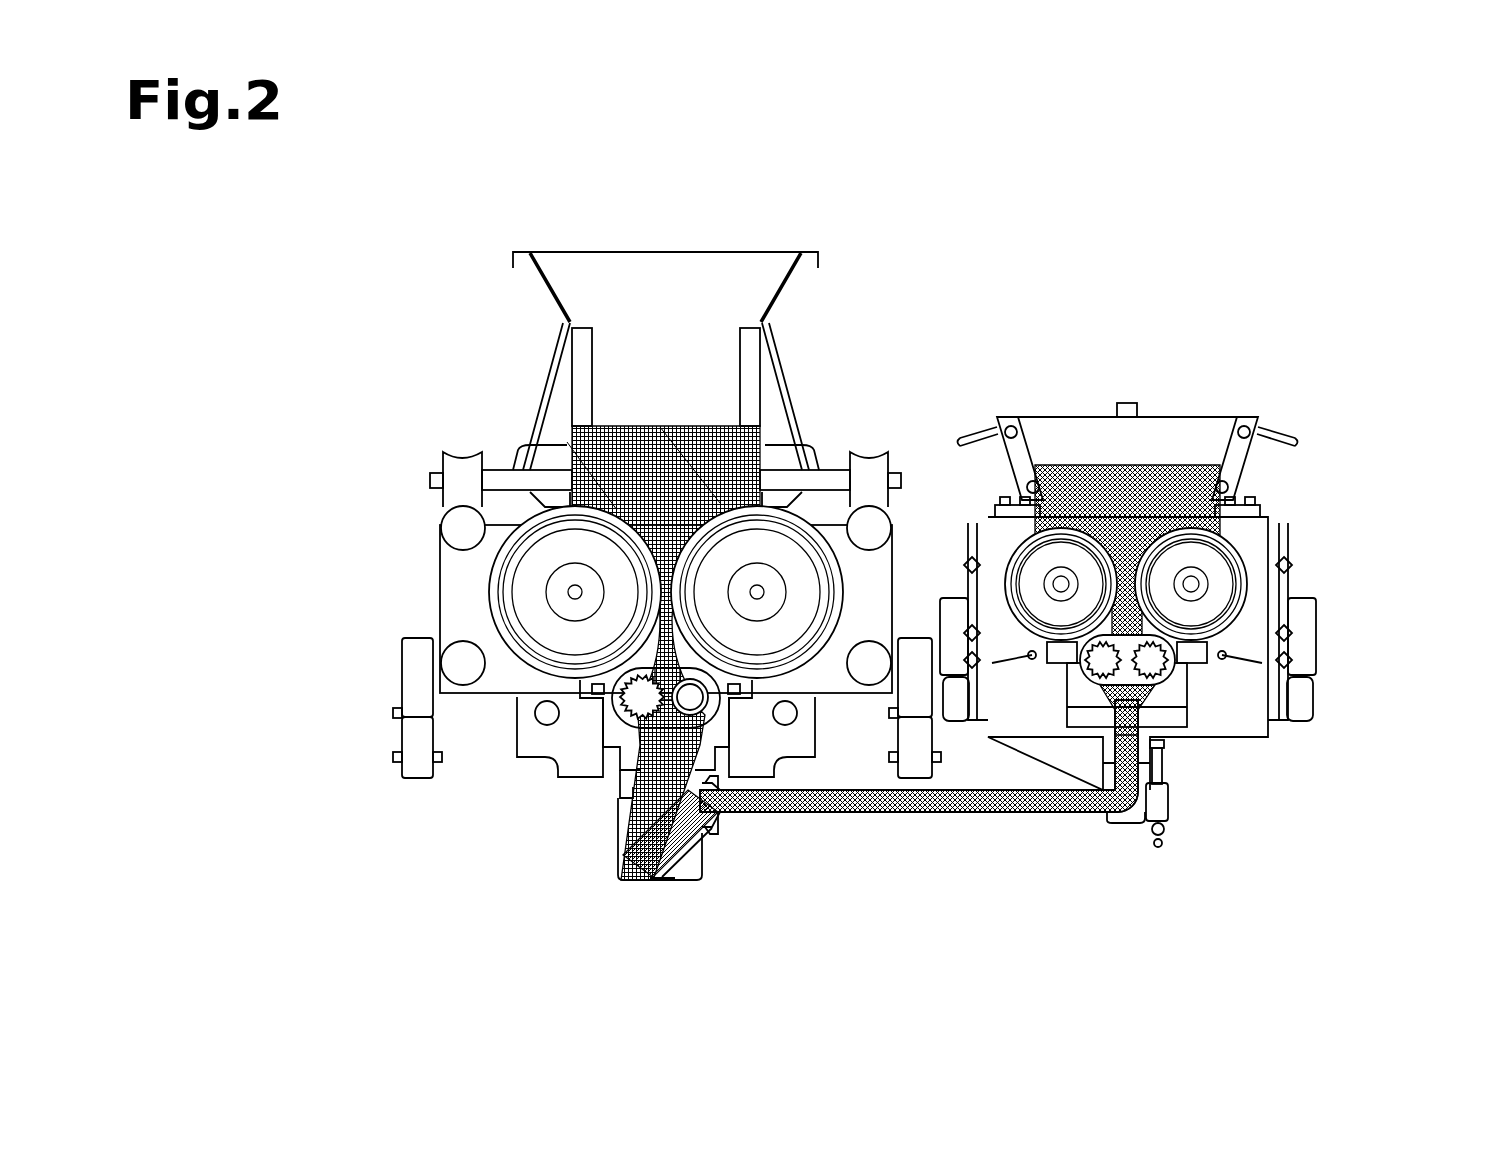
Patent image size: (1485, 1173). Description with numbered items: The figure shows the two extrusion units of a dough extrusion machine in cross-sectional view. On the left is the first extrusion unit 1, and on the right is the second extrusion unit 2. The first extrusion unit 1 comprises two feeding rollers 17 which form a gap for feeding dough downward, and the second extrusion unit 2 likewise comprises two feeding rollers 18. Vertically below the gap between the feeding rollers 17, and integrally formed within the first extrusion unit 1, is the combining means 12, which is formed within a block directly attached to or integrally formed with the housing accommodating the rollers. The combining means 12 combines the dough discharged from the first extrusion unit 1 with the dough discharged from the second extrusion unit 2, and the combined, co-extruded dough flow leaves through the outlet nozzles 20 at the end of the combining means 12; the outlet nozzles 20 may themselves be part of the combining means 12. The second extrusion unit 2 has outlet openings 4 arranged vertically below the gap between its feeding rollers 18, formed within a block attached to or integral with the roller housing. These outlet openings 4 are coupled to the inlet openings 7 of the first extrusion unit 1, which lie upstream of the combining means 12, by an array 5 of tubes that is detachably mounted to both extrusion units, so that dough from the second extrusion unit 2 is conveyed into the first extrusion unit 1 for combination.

The first extrusion unit 1 is at (276, 407).
The second extrusion unit 2 is at (1320, 337).
The outlet openings 4 is at (1090, 758).
The array of tubes 5 is at (942, 816).
The inlet openings 7 is at (714, 818).
The combining means 12 is at (608, 852).
The feeding rollers 17 is at (660, 427).
The feeding rollers 18 is at (1175, 525).
The outlet nozzles 20 is at (623, 878).